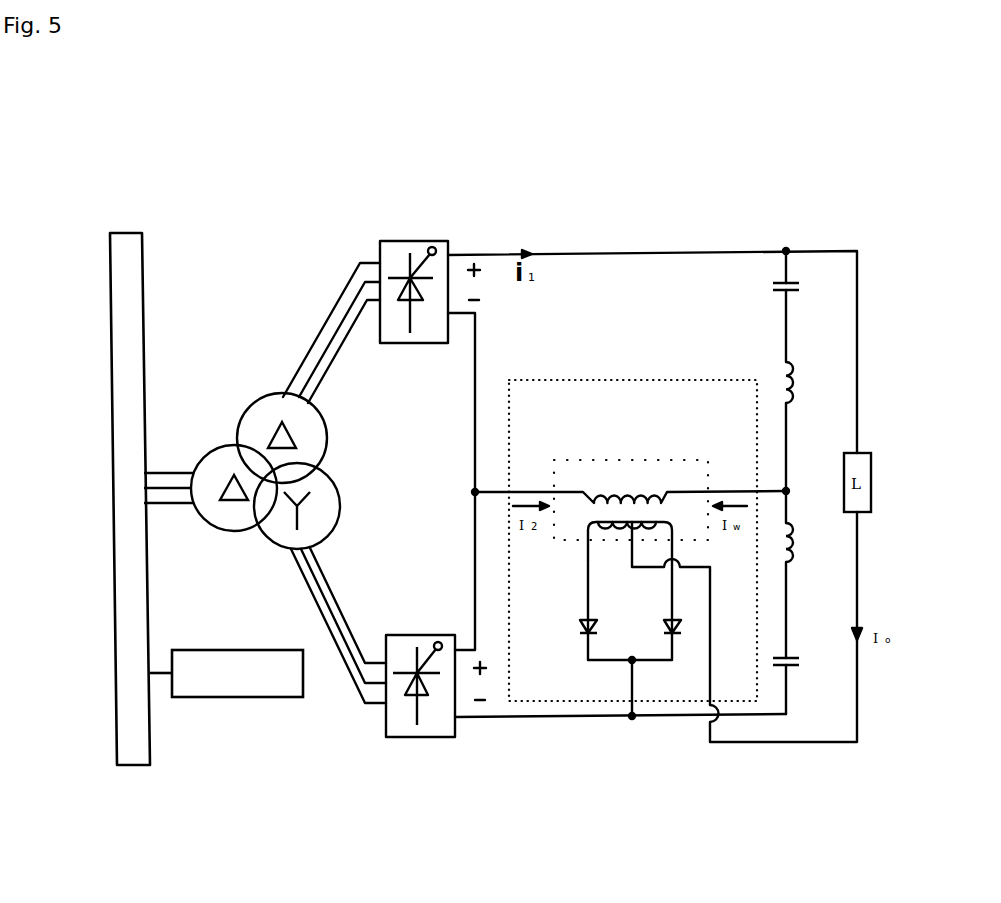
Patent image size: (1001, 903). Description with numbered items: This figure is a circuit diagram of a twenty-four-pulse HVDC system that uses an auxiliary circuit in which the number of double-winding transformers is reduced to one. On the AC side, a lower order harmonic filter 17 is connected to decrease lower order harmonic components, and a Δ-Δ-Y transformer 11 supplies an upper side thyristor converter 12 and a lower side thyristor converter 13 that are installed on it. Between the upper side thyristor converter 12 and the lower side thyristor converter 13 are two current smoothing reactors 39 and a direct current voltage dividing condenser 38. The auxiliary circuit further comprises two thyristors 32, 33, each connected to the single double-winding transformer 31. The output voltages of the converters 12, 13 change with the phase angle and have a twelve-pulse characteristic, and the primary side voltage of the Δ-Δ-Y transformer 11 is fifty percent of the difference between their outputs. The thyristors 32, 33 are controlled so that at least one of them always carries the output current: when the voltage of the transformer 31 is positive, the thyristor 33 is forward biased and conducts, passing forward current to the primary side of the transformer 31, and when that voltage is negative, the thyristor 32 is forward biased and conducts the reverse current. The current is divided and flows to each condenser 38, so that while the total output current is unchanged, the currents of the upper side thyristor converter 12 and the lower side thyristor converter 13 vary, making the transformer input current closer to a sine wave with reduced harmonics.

The Δ-Δ-Y transformer 11 is at (320, 473).
The upper side thyristor converter 12 is at (440, 241).
The lower side thyristor converter 13 is at (422, 635).
The lower order harmonic filter 17 is at (250, 697).
The double-winding transformer 31 is at (641, 461).
The thyristor T2 32 is at (581, 637).
The thyristor T1 33 is at (681, 637).
The direct current voltage dividing condenser 38 is at (819, 662).
The current smoothing reactor 39 is at (820, 543).